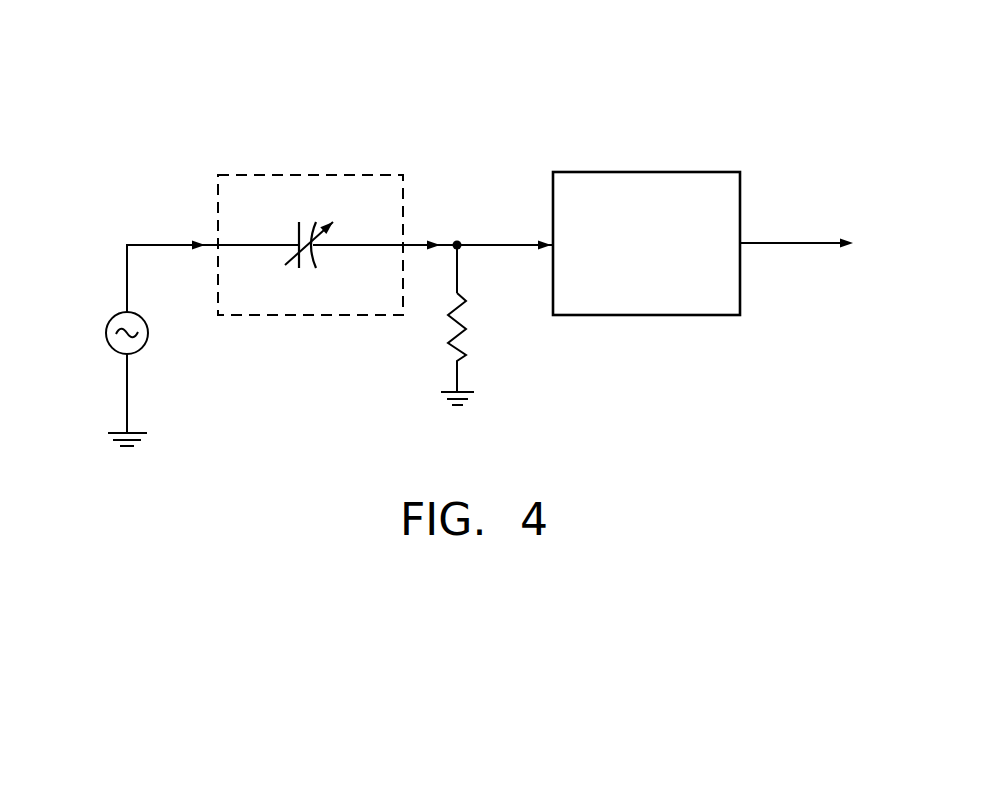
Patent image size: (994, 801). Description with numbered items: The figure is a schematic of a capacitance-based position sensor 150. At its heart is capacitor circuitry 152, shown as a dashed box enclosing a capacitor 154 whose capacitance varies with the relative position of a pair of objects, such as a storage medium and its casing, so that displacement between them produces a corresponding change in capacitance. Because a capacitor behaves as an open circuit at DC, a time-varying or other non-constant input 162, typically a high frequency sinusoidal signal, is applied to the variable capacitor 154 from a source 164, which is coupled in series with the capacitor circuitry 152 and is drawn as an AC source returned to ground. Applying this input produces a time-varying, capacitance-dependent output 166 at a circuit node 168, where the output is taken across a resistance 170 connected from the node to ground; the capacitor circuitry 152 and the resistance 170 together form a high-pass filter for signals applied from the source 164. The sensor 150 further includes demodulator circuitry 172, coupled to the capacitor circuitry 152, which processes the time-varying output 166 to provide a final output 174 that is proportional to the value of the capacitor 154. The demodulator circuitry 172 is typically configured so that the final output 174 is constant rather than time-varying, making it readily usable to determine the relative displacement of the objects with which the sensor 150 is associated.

The capacitance-based position sensor 150 is at (645, 97).
The capacitor circuitry 152 is at (272, 172).
The capacitor 154 is at (307, 213).
The input 162 is at (187, 230).
The source 164 is at (112, 317).
The output 166 is at (440, 228).
The circuit node 168 is at (470, 262).
The resistance 170 is at (430, 345).
The demodulator circuitry 172 is at (655, 170).
The final output 174 is at (842, 260).